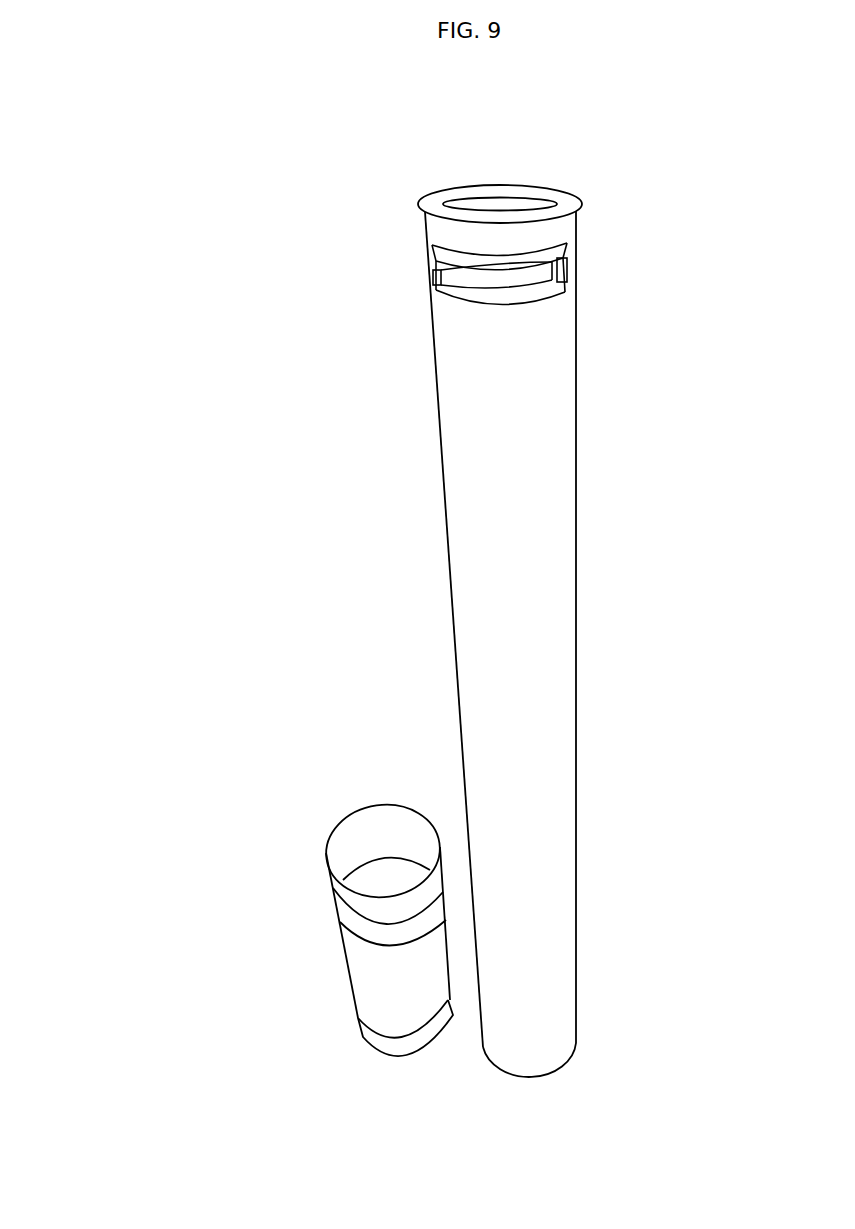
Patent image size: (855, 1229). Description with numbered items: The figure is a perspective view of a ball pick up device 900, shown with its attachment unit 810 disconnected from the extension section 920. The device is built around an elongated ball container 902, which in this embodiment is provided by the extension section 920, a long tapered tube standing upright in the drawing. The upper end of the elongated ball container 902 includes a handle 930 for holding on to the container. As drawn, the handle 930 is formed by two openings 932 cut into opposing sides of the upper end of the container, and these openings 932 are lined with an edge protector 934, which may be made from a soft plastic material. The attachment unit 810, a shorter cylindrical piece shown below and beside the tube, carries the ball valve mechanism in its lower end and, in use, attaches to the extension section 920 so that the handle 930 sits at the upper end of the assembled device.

The ball pick up device 900 is at (137, 187).
The elongated ball container 902 is at (230, 607).
The extension section 920 is at (427, 465).
The handle 930 is at (412, 265).
The edge protector 934 is at (540, 258).
The openings 932 is at (528, 282).
The attachment unit 810 is at (302, 910).